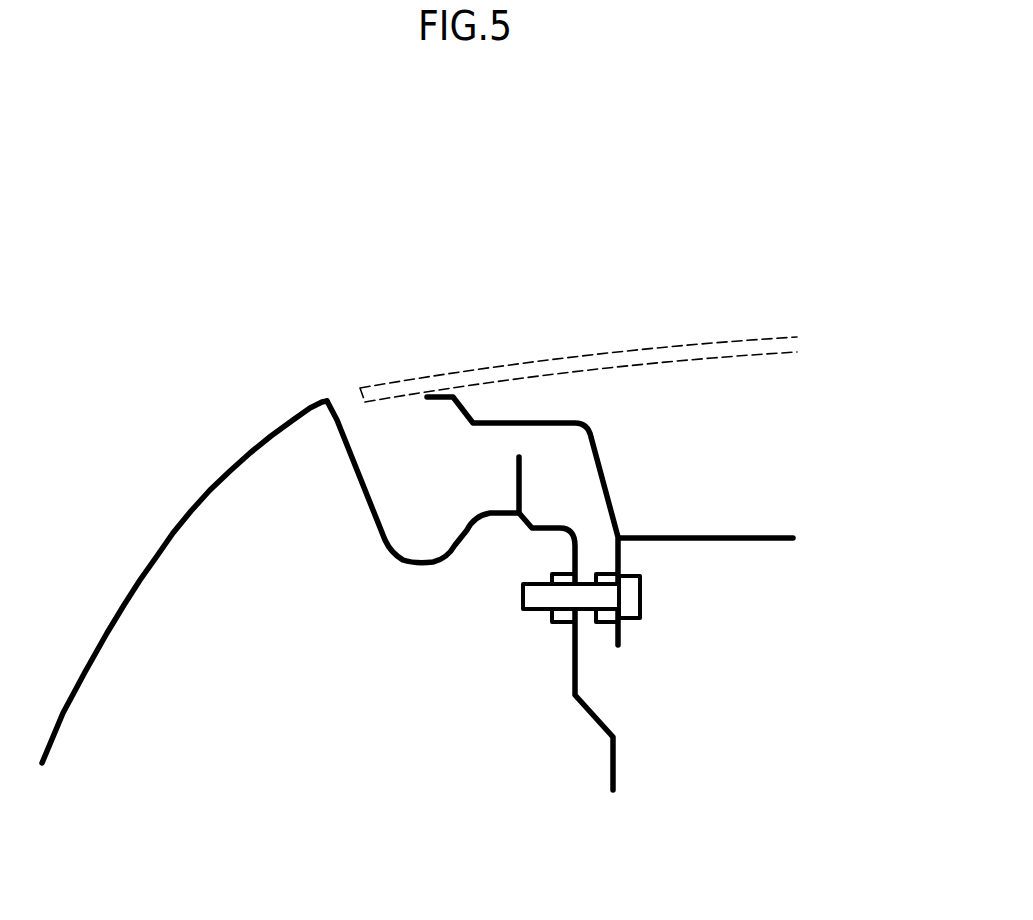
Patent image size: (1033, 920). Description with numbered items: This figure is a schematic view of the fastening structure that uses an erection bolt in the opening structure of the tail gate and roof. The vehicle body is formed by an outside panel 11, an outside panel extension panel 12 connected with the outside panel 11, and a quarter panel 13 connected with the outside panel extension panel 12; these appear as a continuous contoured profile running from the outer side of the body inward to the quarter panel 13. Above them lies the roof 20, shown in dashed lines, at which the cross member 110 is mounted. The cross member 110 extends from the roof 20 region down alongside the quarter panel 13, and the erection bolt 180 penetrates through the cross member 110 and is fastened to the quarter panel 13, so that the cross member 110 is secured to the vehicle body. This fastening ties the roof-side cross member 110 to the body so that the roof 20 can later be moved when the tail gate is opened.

The outside panel 11 is at (170, 540).
The outside panel extension panel 12 is at (390, 547).
The quarter panel 13 is at (540, 533).
The roof 20 is at (680, 353).
The cross member 110 is at (718, 535).
The erection bolt 180 is at (633, 600).